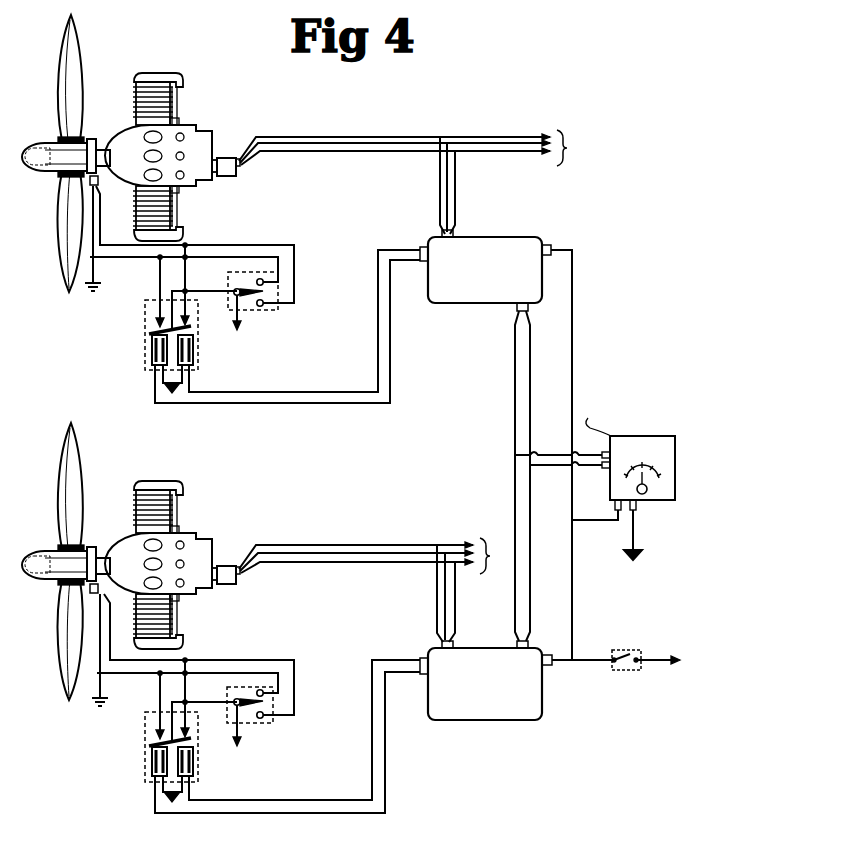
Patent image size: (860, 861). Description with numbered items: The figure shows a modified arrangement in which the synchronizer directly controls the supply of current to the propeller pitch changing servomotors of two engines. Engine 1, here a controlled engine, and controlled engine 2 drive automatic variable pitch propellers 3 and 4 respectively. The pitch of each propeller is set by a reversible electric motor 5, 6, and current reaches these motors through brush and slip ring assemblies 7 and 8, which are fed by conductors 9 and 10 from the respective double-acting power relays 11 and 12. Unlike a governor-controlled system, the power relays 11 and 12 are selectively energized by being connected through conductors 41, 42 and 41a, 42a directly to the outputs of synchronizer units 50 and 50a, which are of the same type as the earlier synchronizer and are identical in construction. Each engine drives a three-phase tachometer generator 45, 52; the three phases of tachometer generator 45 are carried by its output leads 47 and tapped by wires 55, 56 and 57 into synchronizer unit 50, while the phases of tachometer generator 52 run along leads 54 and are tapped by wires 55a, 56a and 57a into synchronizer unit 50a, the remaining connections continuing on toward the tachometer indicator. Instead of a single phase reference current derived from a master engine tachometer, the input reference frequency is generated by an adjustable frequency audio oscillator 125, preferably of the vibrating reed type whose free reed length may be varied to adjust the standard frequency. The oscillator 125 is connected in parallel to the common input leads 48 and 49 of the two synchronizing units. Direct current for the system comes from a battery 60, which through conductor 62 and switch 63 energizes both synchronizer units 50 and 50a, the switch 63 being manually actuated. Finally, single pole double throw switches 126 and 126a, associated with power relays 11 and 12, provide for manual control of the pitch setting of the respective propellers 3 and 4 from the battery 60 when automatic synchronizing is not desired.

The engine 1 is at (130, 517).
The controlled engine 2 is at (125, 106).
The automatic variable pitch propeller 3 is at (68, 662).
The automatic variable pitch propeller 4 is at (62, 77).
The reversible electric motor 5 is at (33, 582).
The reversible electric motor 6 is at (37, 143).
The brush and slip ring assembly 7 is at (95, 554).
The brush and slip ring assembly 8 is at (94, 146).
The conductor 9 is at (220, 661).
The conductor 10 is at (220, 246).
The double-acting power relay 11 is at (145, 756).
The double-acting power relay 12 is at (145, 327).
The conductor 41 is at (371, 688).
The conductor 41a is at (377, 302).
The conductor 42 is at (386, 705).
The conductor 42a is at (391, 327).
The tachometer generator 45 is at (228, 588).
The tachometer wires to indicator 47 is at (362, 556).
The common input lead 48 is at (514, 491).
The common input lead 49 is at (531, 490).
The synchronizer unit 50 is at (495, 648).
The synchronizer unit 50a is at (527, 237).
The tachometer generator 52 is at (228, 176).
The tachometer wires to indicator 54 is at (331, 140).
The tap wire to synchronizing unit 55 is at (436, 589).
The tap wire to synchronizing unit 55a is at (439, 185).
The tap wire to synchronizing unit 56 is at (444, 620).
The tap wire to synchronizing unit 56a is at (446, 202).
The tap wire to synchronizing unit 57 is at (456, 598).
The tap wire to synchronizing unit 57a is at (456, 198).
The battery 60 is at (492, 544).
The conductor 62 is at (659, 659).
The switch 63 is at (620, 649).
The adjustable frequency audio oscillator 125 is at (677, 466).
The single pole double throw switch 126 is at (274, 721).
The single pole double throw switch 126a is at (236, 312).